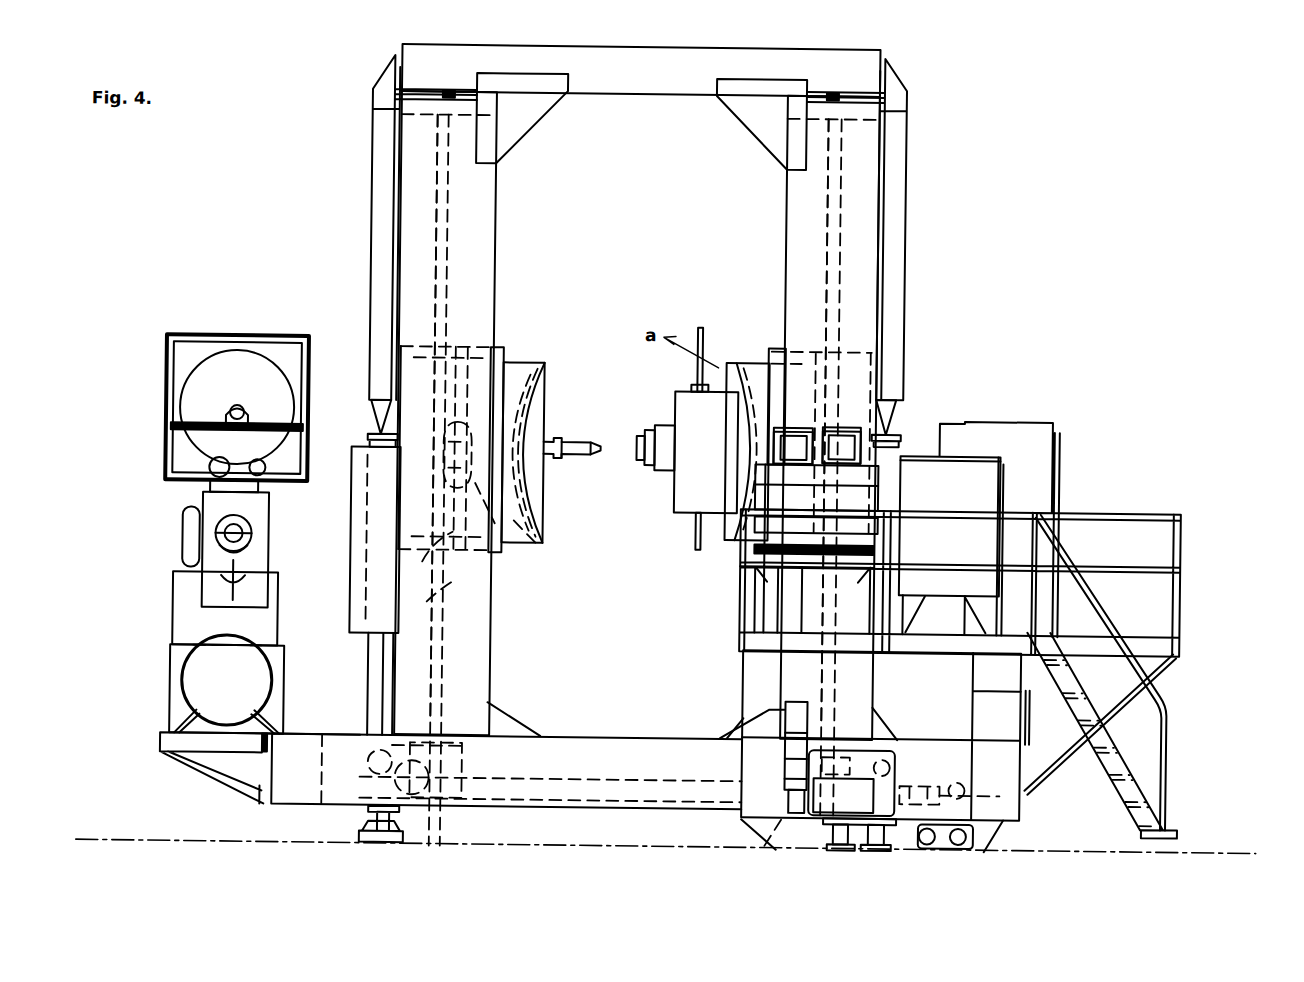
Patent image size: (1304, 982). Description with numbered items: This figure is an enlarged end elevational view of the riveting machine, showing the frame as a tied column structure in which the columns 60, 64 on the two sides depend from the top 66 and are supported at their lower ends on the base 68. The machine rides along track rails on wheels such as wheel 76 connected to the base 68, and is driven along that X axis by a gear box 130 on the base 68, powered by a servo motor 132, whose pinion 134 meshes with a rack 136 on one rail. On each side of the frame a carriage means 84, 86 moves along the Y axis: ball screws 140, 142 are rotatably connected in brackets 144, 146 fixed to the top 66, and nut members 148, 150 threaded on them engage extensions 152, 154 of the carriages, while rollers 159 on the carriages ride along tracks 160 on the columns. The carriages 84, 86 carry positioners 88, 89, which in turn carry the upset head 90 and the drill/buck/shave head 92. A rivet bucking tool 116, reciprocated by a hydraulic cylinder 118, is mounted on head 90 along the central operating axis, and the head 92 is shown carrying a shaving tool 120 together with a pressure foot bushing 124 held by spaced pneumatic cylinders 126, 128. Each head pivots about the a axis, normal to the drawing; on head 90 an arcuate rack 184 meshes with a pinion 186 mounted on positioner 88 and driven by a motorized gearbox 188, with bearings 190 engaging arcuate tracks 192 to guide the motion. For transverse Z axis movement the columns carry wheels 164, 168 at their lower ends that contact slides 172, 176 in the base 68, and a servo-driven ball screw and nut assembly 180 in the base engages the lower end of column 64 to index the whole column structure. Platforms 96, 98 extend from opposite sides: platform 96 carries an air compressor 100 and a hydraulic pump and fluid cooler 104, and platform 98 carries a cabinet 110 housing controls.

The column 60 is at (497, 189).
The column 64 is at (788, 186).
The top 66 is at (650, 48).
The base 68 is at (649, 764).
The wheel 76 is at (380, 824).
The first carriage means 84 is at (500, 347).
The second carriage means 86 is at (771, 356).
The first positioner 88 is at (521, 361).
The second positioner 89 is at (751, 358).
The upset head 90 is at (547, 416).
The drill/buck/shave head 92 is at (677, 389).
The platform 96 is at (348, 731).
The platform 98 is at (1102, 627).
The air compressor 100 is at (251, 702).
The hydraulic pump and fluid cooler 104 is at (212, 340).
The cabinet 110 is at (1040, 415).
The rivet bucking tool 116 is at (569, 444).
The hydraulic cylinder 118 is at (559, 457).
The shaving tool 120 is at (679, 446).
The pressure foot bushing 124 is at (650, 465).
The pneumatic cylinder 126 is at (666, 479).
The pneumatic cylinder 128 is at (667, 415).
The gear box 130 is at (843, 822).
The servo motor 132 is at (818, 697).
The pinion 134 is at (860, 842).
The rack 136 is at (892, 848).
The ball screw 140 is at (376, 403).
The ball screw 142 is at (890, 406).
The bracket 144 is at (382, 90).
The bracket 146 is at (898, 86).
The nut member 148 is at (356, 546).
The nut member 150 is at (905, 472).
The extension 152 is at (376, 441).
The extension 154 is at (900, 436).
The roller 159 is at (443, 351).
The track 160 is at (448, 228).
The wheel 164 is at (452, 848).
The wheel 168 is at (830, 795).
The slide 172 is at (482, 845).
The slide 176 is at (751, 848).
The Z axis drive 180 is at (959, 772).
The arcuate rack 184 is at (529, 550).
The pinion 186 is at (478, 421).
The motorized gearbox 188 is at (458, 542).
The bearing 190 is at (553, 391).
The arcuate track 192 is at (550, 378).